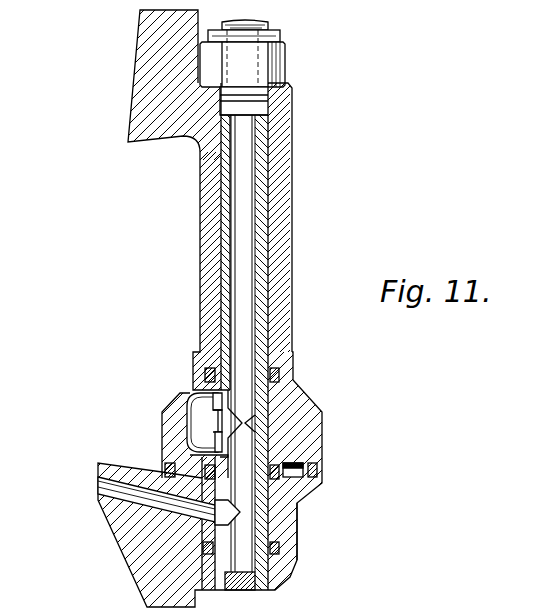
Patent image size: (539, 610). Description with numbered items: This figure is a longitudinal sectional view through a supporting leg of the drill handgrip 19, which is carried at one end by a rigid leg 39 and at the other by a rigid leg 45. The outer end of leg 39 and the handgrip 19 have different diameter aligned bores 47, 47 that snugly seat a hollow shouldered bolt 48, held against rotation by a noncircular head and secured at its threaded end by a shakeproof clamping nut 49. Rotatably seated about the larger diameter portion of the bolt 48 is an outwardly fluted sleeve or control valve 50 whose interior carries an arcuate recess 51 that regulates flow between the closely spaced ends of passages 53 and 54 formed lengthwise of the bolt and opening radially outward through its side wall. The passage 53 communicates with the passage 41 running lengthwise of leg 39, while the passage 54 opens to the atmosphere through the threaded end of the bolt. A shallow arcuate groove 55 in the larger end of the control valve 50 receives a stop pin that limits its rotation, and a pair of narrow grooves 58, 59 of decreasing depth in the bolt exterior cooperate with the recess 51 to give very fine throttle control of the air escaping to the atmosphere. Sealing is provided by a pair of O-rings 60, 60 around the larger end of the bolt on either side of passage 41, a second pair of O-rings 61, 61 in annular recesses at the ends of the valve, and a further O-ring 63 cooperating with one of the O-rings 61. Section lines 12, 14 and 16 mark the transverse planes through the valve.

The section line 12— 12 is at (85, 472).
The section line 14— 14 is at (105, 440).
The section line 16— 16 is at (110, 400).
The handgrip 19 is at (293, 184).
The supporting leg 39 is at (123, 542).
The passage 41 is at (115, 482).
The rigid leg 45 is at (128, 121).
The aligned bores 47 is at (226, 214).
The hollow shouldered bolt 48 is at (225, 256).
The shakeproof clamping nut 49 is at (282, 62).
The control valve 50 is at (318, 418).
The arcuate recess 51 is at (210, 400).
The passage 53 is at (218, 422).
The passage 54 is at (203, 405).
The shallow arcuate groove 55 is at (325, 458).
The narrow groove 58 is at (222, 442).
The narrow groove 59 is at (214, 393).
The O-ring 60 is at (284, 492).
The O-ring 61 is at (290, 378).
The O-ring 63 is at (318, 470).